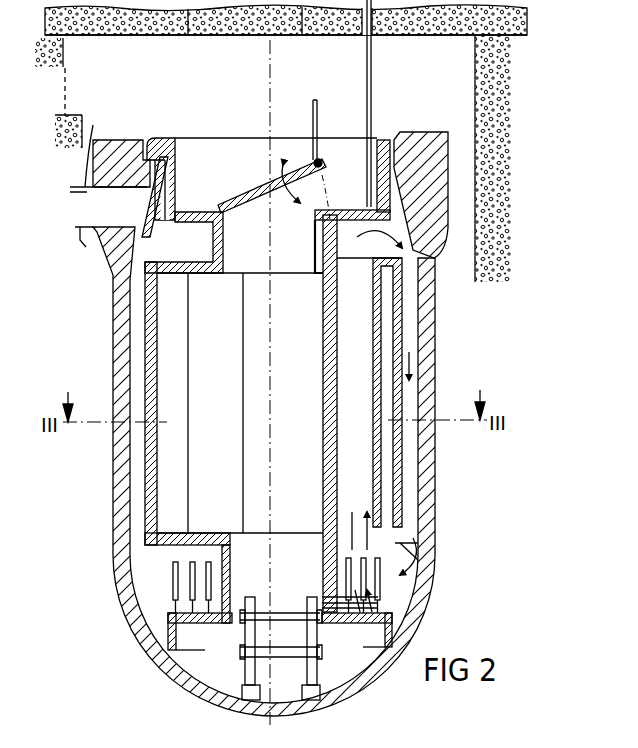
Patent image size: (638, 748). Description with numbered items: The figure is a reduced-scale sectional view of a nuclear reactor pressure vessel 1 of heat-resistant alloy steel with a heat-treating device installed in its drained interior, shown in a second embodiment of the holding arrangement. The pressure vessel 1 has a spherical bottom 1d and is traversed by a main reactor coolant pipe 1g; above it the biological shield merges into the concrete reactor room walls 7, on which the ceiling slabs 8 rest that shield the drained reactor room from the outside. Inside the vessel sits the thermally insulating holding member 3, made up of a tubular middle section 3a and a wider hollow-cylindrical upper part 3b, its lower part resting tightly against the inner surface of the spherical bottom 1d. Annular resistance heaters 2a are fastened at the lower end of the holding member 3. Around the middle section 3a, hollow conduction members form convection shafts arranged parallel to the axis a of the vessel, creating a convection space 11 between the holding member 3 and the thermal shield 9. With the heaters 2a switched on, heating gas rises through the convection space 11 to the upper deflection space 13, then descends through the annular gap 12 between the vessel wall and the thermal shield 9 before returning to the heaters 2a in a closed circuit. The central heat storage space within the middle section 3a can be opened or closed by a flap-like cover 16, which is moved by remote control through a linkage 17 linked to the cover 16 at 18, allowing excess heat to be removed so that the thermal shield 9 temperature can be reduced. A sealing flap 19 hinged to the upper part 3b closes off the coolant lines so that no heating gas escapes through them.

The pressure vessel 1 is at (120, 335).
The spherical bottom 1d is at (82, 251).
The main reactor coolant pipe 1g is at (110, 150).
The annular resistance heaters 2a is at (173, 582).
The holding member 3 is at (333, 325).
The tubular middle section 3a is at (332, 430).
The upper part 3b is at (176, 165).
The reactor room walls 7 is at (505, 82).
The ceiling slabs 8 is at (407, 23).
The thermal shield 9 is at (402, 340).
The convection space 11 is at (366, 395).
The annular gap 12 is at (412, 455).
The upper deflection space 13 is at (410, 252).
The cover 16 is at (247, 193).
The linkage 17 is at (318, 115).
The link point 18 is at (322, 160).
The sealing flap 19 is at (146, 237).
The axis a is at (277, 307).